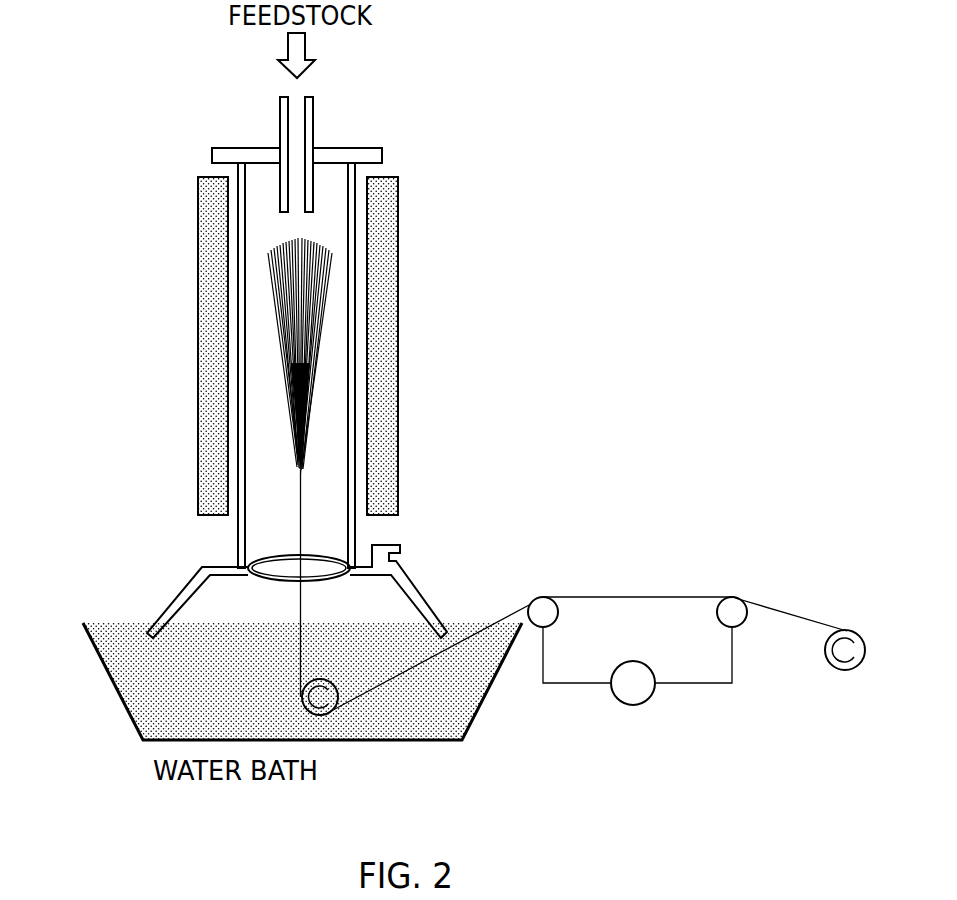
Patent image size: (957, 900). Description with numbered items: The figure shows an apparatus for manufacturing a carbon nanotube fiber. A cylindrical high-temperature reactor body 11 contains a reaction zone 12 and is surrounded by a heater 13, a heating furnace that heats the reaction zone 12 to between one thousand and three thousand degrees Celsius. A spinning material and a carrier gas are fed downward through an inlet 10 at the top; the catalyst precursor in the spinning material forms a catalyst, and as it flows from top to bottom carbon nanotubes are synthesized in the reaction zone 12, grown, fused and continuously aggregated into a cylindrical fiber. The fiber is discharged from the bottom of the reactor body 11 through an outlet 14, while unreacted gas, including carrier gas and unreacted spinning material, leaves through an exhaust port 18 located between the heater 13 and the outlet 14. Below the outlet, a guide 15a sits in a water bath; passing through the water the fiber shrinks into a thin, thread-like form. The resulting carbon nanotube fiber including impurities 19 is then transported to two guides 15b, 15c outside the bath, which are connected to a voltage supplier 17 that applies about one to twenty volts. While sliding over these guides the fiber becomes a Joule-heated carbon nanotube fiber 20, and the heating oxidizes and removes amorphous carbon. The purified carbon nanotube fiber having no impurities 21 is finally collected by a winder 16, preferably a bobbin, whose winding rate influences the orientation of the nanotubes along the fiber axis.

The inlet 10 is at (279, 126).
The reactor body 11 is at (238, 191).
The reaction zone 12 is at (282, 466).
The heater 13 is at (208, 261).
The outlet 14 is at (247, 563).
The guide 15a is at (321, 717).
The guide 15b is at (545, 597).
The guide 15c is at (721, 597).
The winder 16 is at (840, 619).
The voltage supplier 17 is at (652, 704).
The exhaust port 18 is at (405, 549).
The carbon nanotube fiber including impurities 19 is at (424, 669).
The Joule-heated carbon nanotube fiber 20 is at (651, 595).
The carbon nanotube fiber having no impurities 21 is at (782, 600).